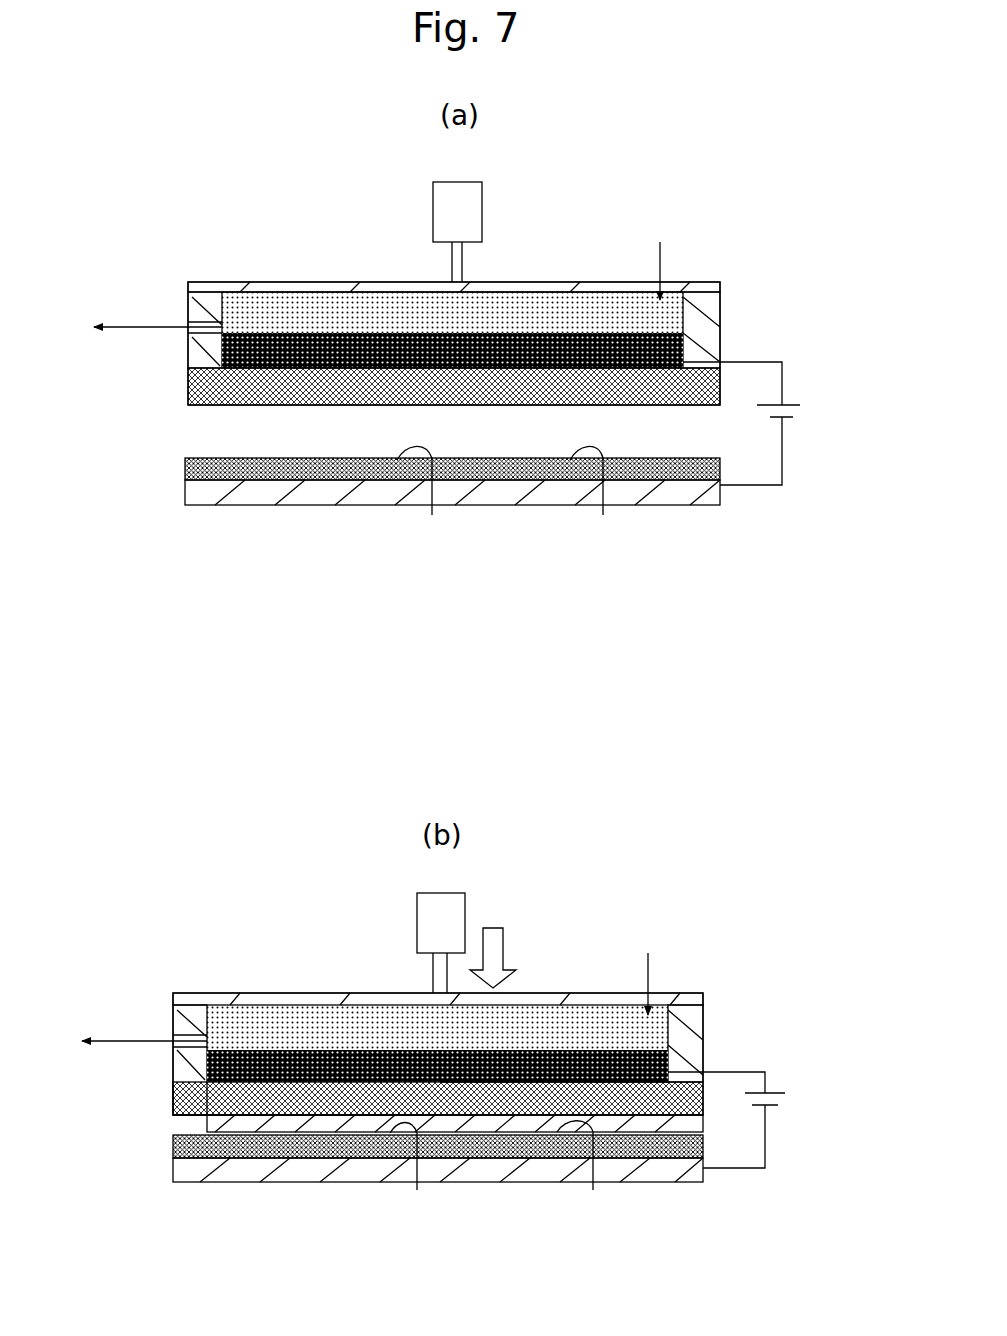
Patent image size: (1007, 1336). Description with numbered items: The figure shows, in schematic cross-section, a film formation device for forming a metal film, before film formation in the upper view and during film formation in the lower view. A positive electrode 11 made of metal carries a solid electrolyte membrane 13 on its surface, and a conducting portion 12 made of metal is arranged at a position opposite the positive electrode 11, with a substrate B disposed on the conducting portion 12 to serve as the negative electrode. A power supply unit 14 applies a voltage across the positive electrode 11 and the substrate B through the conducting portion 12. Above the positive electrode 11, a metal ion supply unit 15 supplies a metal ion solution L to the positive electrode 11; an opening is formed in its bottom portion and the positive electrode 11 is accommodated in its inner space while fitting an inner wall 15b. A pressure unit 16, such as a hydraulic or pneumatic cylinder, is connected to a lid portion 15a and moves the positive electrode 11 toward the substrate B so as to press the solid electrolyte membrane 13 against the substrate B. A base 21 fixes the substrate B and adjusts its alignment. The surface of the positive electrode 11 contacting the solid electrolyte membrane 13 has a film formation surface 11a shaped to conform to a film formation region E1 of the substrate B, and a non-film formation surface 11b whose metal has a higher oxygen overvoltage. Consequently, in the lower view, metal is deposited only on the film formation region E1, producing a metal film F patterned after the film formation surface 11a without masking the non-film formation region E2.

The metal ion supply unit 15 is at (188, 298).
The lid portion 15a is at (540, 290).
The inner wall 15b is at (222, 330).
The metal ion solution L is at (305, 320).
The base 21 is at (510, 295).
The pressure unit 16 is at (433, 205).
The positive electrode 11 is at (222, 349).
The film formation surface 11a is at (360, 368).
The non-film formation surface 11b is at (553, 368).
The solid electrolyte membrane 13 is at (188, 386).
The metal film F is at (297, 1123).
The substrate B is at (338, 478).
The conducting portion 12 is at (290, 500).
The film formation region E1 is at (418, 834).
The non-film formation region E2 is at (587, 834).
The power supply unit 14 is at (790, 410).